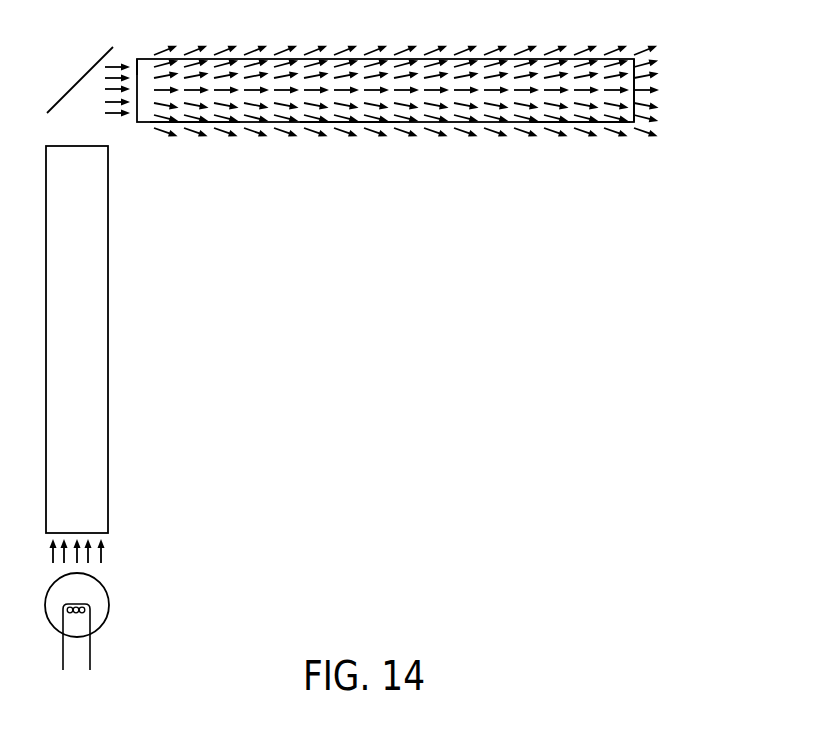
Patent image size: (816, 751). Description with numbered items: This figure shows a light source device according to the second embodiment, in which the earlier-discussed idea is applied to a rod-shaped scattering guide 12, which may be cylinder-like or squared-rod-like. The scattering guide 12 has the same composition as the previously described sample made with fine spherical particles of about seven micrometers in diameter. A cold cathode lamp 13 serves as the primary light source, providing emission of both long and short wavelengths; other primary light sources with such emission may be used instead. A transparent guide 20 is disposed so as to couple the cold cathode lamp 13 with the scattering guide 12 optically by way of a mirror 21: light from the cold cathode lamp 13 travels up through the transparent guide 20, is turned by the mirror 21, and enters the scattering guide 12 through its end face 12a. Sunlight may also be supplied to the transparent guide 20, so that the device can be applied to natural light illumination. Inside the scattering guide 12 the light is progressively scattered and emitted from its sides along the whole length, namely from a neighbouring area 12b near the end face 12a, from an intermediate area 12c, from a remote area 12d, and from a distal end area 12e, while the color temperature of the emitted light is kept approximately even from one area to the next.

The scattering guide 12 is at (442, 112).
The end face 12a is at (134, 59).
The neighbouring area 12b is at (190, 143).
The intermediate area 12c is at (348, 143).
The remote area 12d is at (580, 143).
The distal end area 12e is at (635, 92).
The cold cathode lamp 13 is at (93, 600).
The transparent guide 20 is at (93, 358).
The mirror 21 is at (92, 69).